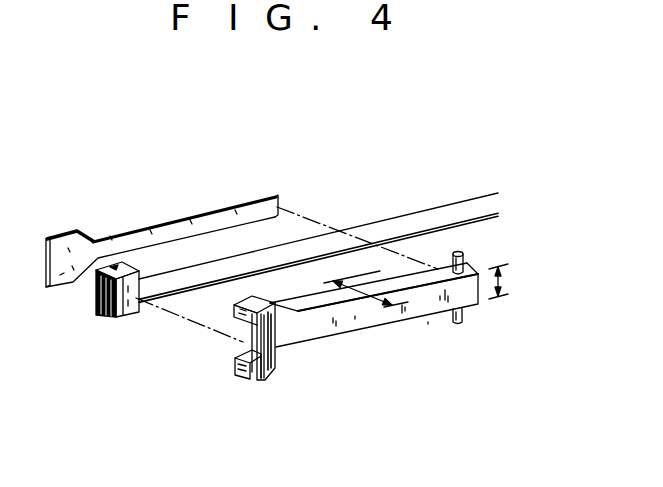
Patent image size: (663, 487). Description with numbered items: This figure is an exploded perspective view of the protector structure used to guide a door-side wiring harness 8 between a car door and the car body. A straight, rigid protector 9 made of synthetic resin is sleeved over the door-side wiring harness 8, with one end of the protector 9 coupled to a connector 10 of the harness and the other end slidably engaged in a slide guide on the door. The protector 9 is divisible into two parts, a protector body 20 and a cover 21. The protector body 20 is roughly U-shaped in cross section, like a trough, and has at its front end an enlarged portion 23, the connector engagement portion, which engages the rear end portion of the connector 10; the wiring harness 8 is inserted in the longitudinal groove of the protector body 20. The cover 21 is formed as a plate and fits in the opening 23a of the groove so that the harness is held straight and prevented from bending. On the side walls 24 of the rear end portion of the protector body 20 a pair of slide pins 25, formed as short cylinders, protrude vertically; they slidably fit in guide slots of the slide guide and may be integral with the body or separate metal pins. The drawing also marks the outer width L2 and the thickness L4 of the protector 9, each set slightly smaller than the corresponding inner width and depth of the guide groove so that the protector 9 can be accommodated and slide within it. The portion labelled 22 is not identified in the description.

The door-side wiring harness 8 is at (405, 214).
The protector 9 is at (365, 298).
The connector 10 is at (127, 318).
The protector body 20 is at (387, 281).
The cover 21 is at (138, 229).
The flat portion of bar member 22 is at (286, 350).
The enlarged portion 23 is at (223, 370).
The opening 23a is at (243, 356).
The side walls 24 is at (434, 269).
The slide pins 25 is at (463, 251).
The outer width of the protector L2 is at (523, 282).
The thickness of the protector L4 is at (366, 279).